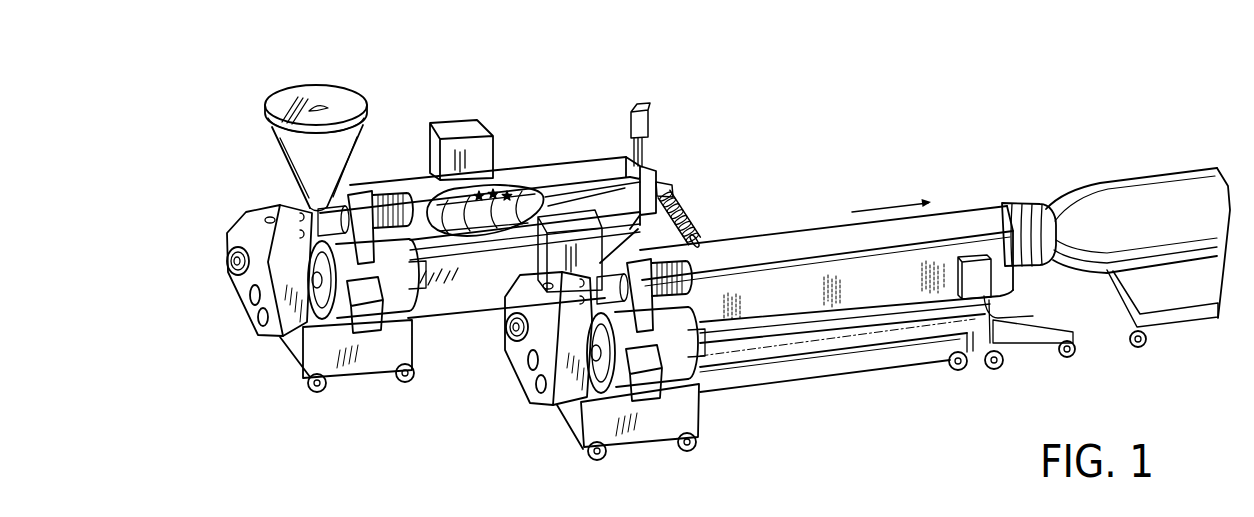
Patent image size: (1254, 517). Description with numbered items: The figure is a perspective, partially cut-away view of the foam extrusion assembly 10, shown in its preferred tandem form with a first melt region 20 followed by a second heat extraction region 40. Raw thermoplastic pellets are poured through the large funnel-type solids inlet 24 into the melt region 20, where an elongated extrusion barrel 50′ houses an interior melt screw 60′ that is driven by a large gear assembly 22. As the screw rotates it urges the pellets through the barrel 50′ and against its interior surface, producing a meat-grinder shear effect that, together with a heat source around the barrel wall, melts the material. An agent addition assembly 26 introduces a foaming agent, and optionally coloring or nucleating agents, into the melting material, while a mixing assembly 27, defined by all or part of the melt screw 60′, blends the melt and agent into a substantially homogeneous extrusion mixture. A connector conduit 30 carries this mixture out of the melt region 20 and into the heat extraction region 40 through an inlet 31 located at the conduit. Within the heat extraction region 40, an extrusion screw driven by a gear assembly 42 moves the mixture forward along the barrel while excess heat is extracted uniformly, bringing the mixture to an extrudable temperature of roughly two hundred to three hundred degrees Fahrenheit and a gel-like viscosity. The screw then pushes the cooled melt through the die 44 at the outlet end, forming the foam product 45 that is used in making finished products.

The foam extrusion assembly 10 is at (950, 155).
The melt region 20 is at (444, 318).
The gear assembly 22 is at (252, 214).
The solids inlet 24 is at (280, 105).
The agent addition assembly 26 is at (456, 126).
The mixing assembly 27 is at (507, 193).
The connector conduit 30 is at (680, 200).
The inlet 31 is at (700, 236).
The heat extraction region 40 is at (798, 227).
The gear assembly 42 is at (522, 386).
The die 44 is at (1049, 207).
The foam product 45 is at (1143, 192).
The extrusion barrel 50′ is at (433, 203).
The interior melt screw 60′ is at (488, 200).